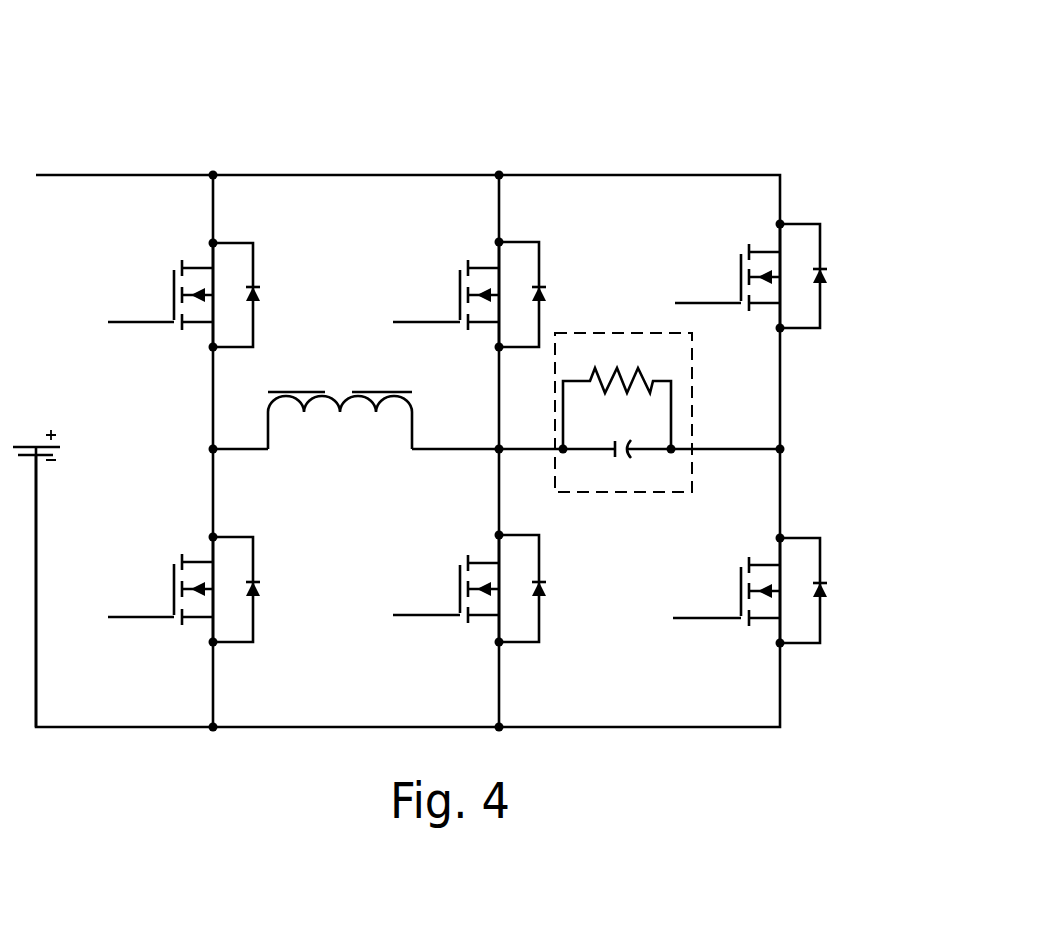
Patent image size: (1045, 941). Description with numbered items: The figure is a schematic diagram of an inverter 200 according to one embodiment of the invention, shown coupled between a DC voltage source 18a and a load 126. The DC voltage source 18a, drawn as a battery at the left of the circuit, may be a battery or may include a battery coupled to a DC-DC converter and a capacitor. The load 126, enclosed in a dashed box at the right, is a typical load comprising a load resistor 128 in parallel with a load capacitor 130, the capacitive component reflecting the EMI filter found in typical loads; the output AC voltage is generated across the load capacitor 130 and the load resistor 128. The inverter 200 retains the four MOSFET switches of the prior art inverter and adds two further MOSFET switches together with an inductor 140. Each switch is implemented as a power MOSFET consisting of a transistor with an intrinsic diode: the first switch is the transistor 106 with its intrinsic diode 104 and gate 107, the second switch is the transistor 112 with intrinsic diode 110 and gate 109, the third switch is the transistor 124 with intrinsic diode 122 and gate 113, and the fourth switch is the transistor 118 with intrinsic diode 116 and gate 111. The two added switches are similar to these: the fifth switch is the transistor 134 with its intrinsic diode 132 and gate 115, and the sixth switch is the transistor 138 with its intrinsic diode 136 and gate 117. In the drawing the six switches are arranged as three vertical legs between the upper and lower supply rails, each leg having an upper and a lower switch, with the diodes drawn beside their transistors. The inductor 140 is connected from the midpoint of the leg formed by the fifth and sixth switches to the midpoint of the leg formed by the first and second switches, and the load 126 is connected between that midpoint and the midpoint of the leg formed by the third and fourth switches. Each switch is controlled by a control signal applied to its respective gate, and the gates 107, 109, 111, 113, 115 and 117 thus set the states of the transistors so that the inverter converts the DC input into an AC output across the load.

The inverter 200 is at (628, 120).
The DC voltage source 18a is at (57, 420).
The transistor 134 is at (163, 262).
The gate 115 is at (148, 322).
The intrinsic diode 132 is at (260, 297).
The transistor 106 is at (450, 258).
The gate 107 is at (422, 322).
The intrinsic diode 104 is at (545, 295).
The transistor 124 is at (728, 245).
The gate 113 is at (713, 305).
The intrinsic diode 122 is at (827, 275).
The transistor 138 is at (165, 553).
The gate 117 is at (130, 617).
The intrinsic diode 136 is at (262, 593).
The transistor 112 is at (450, 550).
The gate 109 is at (425, 617).
The intrinsic diode 110 is at (545, 592).
The transistor 118 is at (733, 555).
The gate 111 is at (708, 620).
The intrinsic diode 116 is at (825, 597).
The inductor 140 is at (424, 391).
The load 126 is at (673, 403).
The load resistor 128 is at (635, 373).
The load capacitor 130 is at (630, 453).